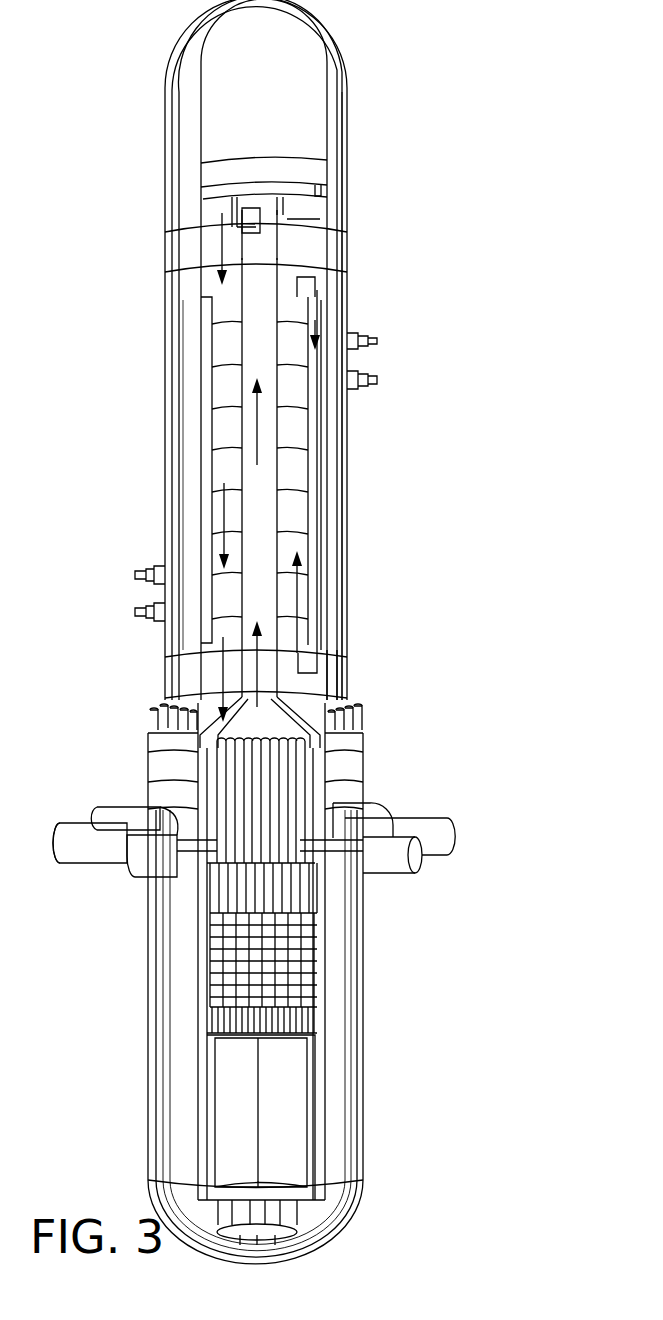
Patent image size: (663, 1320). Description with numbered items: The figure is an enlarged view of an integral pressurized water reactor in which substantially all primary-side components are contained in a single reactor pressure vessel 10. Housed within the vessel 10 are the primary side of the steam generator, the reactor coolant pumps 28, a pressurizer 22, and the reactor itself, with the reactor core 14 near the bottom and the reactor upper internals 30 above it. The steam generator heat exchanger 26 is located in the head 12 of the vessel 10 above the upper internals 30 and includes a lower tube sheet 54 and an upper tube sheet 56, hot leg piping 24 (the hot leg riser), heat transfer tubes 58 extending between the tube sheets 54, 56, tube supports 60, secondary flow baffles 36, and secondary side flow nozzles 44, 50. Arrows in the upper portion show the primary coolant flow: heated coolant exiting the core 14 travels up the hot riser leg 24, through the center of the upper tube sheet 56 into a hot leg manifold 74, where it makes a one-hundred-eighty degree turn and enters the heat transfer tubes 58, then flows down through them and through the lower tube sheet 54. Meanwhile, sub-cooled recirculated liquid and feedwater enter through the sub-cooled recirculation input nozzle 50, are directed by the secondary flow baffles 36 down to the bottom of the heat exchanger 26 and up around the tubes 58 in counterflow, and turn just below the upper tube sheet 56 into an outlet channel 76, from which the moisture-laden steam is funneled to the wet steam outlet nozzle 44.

The reactor pressure vessel 10 is at (360, 1043).
The head 12 is at (355, 713).
The reactor core 14 is at (295, 1140).
The pressurizer 22 is at (302, 88).
The hot leg piping 24 is at (257, 524).
The heat exchanger 26 is at (287, 490).
The reactor coolant pumps 28 is at (418, 863).
The reactor upper internals 30 is at (230, 960).
The secondary flow baffles 36 is at (315, 368).
The wet steam outlet nozzle 44 is at (362, 331).
The sub-cooled recirculation input nozzle 50 is at (357, 392).
The lower tube sheet 54 is at (340, 672).
The upper tube sheet 56 is at (312, 250).
The heat transfer tubes 58 is at (227, 472).
The tube supports 60 is at (227, 448).
The hot leg manifold 74 is at (320, 208).
The outlet channel 76 is at (322, 512).